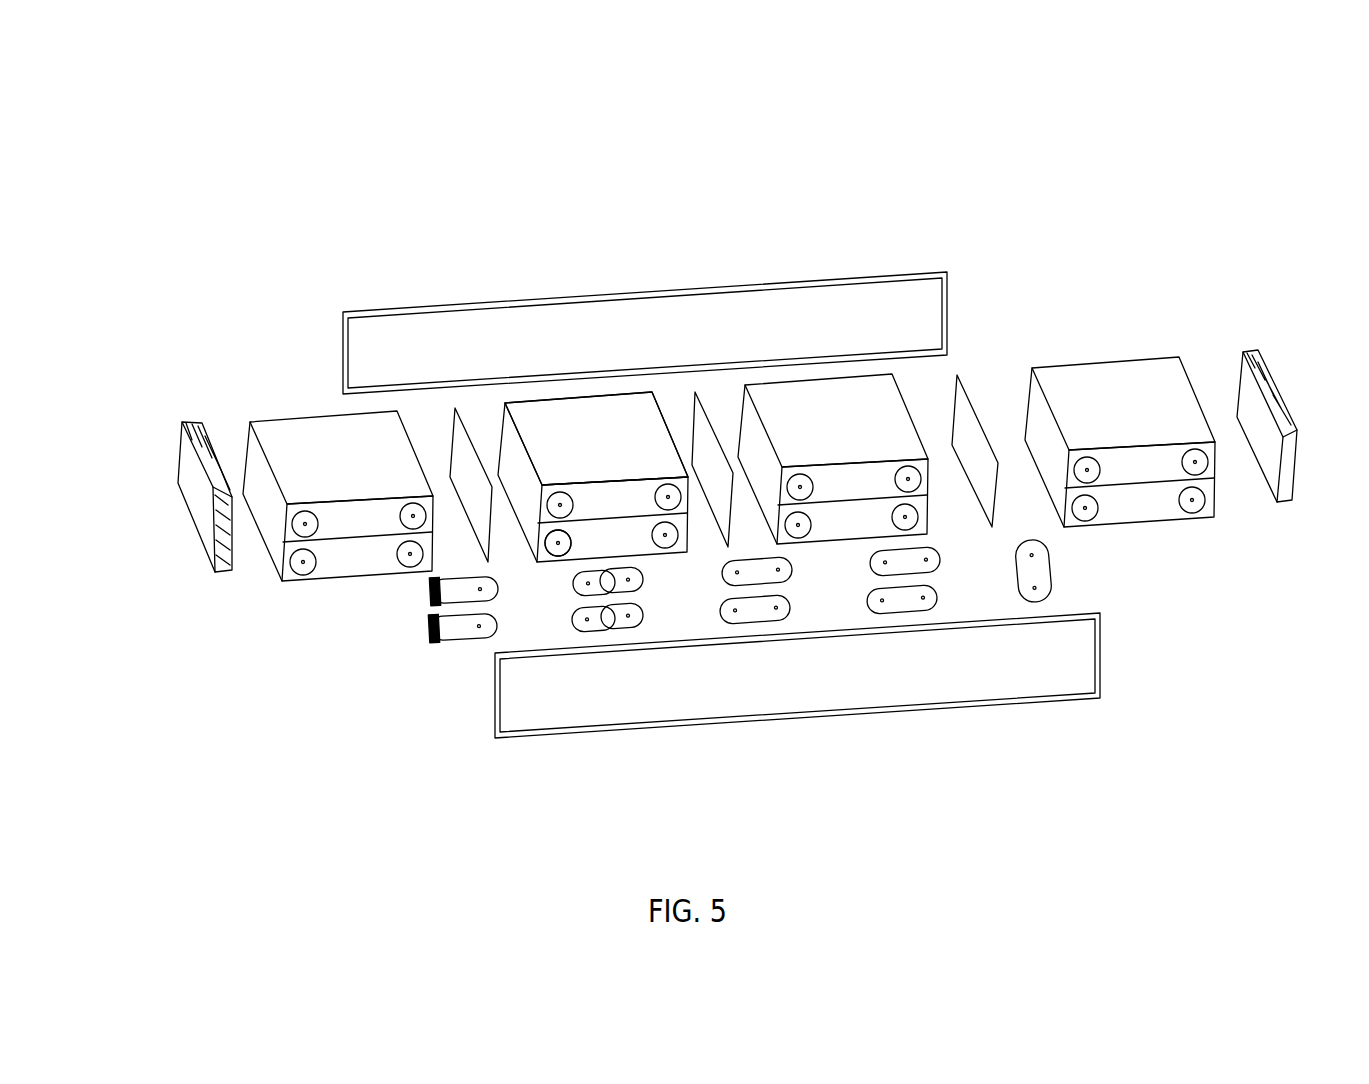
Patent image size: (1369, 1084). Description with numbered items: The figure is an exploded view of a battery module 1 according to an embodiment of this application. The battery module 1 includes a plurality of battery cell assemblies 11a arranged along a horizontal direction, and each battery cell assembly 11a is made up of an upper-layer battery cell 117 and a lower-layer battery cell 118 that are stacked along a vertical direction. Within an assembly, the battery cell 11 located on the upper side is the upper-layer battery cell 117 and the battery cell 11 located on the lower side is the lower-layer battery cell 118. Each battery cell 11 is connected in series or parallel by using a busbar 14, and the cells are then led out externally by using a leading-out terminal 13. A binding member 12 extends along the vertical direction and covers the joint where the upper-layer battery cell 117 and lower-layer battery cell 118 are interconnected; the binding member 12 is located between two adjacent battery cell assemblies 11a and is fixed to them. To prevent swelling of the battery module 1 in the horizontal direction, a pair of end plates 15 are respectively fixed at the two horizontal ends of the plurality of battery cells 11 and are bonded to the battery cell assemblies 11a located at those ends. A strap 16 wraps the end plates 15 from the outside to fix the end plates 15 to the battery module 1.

The battery module 1 is at (886, 188).
The battery cell 11 is at (1127, 360).
The battery cell assembly 11a is at (583, 427).
The binding member 12 is at (698, 393).
The leading-out terminal 13 is at (453, 642).
The busbar 14 is at (907, 598).
The end plate 15 is at (177, 433).
The strap 16 is at (760, 722).
The upper-layer battery cell 117 is at (538, 425).
The lower-layer battery cell 118 is at (592, 543).